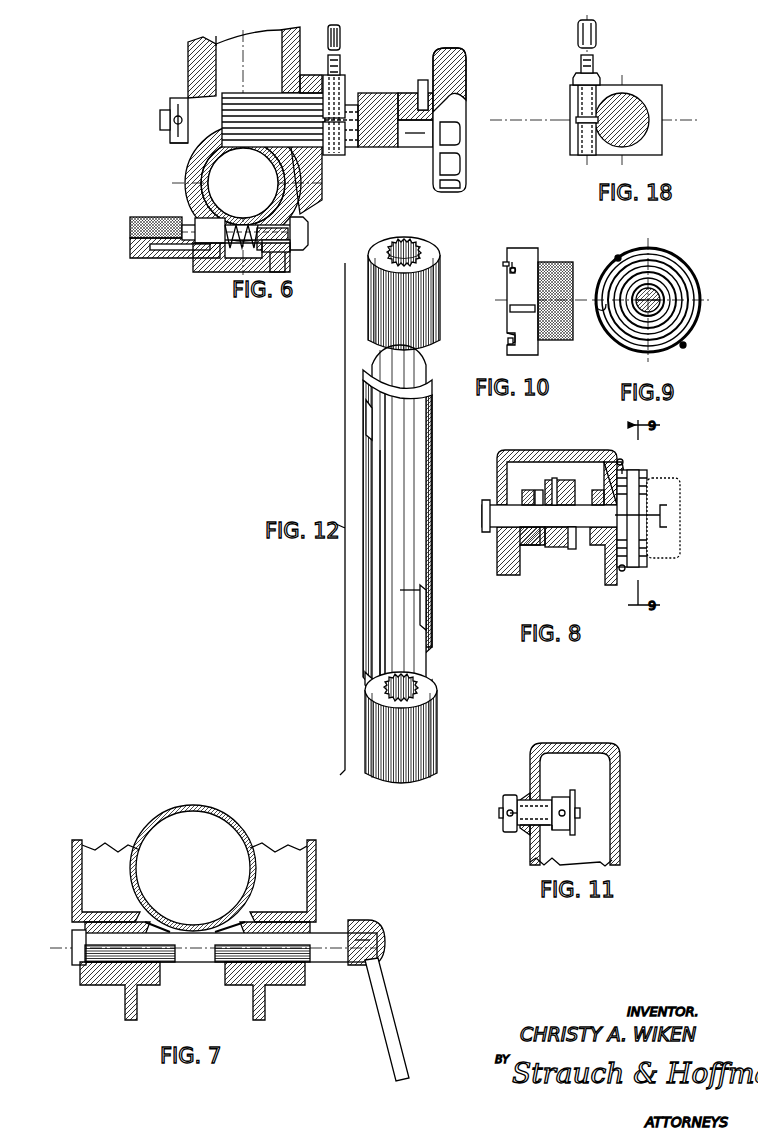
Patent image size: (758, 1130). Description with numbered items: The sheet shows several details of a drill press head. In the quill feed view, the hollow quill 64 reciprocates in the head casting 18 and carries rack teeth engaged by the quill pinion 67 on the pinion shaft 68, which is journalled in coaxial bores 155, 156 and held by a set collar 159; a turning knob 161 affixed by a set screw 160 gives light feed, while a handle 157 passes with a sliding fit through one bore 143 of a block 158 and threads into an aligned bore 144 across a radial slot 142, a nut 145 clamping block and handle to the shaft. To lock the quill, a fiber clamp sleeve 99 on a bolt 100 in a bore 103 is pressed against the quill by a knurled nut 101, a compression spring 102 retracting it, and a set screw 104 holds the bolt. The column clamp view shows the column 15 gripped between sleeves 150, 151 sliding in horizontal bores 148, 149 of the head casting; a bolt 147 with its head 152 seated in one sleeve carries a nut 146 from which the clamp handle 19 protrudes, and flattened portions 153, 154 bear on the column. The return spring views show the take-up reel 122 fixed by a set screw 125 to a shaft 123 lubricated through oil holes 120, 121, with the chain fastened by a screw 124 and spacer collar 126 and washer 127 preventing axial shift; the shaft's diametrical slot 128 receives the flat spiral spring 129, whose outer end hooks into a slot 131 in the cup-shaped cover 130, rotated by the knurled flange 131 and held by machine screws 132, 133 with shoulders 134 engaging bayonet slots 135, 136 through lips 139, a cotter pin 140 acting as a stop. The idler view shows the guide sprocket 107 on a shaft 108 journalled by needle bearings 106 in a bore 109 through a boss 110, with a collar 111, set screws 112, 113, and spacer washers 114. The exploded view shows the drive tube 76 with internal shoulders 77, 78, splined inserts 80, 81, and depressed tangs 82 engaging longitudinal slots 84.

In FIG. 7, the column 15 is at (199, 806).
In FIG. 6, the head casting 18 is at (358, 38).
In FIG. 8, the head casting 18 is at (533, 450).
In FIG. 11, the head casting 18 is at (620, 762).
In FIG. 7, the head casting 18 is at (316, 852).
In FIG. 7, the clamp handle 19 is at (390, 1003).
In FIG. 6, the quill 64 is at (284, 176).
In FIG. 6, the quill pinion 67 is at (247, 93).
In FIG. 6, the quill pinion shaft 68 is at (360, 100).
In FIG. 18, the quill pinion shaft 68 is at (644, 106).
In FIG. 12, the drive tube 76 is at (432, 480).
In FIG. 12, the internal shoulder 77 is at (426, 412).
In FIG. 12, the internal shoulder 78 is at (428, 585).
In FIG. 12, the insert 80 is at (432, 297).
In FIG. 12, the insert 81 is at (430, 728).
In FIG. 12, the depressed tang 82 is at (366, 420).
In FIG. 12, the longitudinal slot 84 is at (375, 307).
In FIG. 6, the fiber clamp sleeve 99 is at (198, 220).
In FIG. 6, the bolt 100 is at (280, 265).
In FIG. 6, the knurled nut 101 is at (153, 217).
In FIG. 6, the coiled compression spring 102 is at (218, 272).
In FIG. 6, the bore 103 is at (308, 226).
In FIG. 6, the set screw 104 is at (288, 258).
In FIG. 11, the needle bearings 106 is at (540, 800).
In FIG. 11, the guide sprocket 107 is at (572, 830).
In FIG. 11, the shaft 108 is at (580, 813).
In FIG. 11, the bore 109 is at (528, 828).
In FIG. 11, the boss 110 is at (528, 795).
In FIG. 11, the collar 111 is at (505, 830).
In FIG. 11, the set screw 112 is at (572, 790).
In FIG. 11, the set screw 113 is at (503, 810).
In FIG. 11, the spacer washers 114 is at (552, 830).
In FIG. 8, the oil hole 120 is at (495, 510).
In FIG. 8, the oil hole 121 is at (610, 462).
In FIG. 8, the take-up reel 122 is at (555, 547).
In FIG. 9, the shaft 123 is at (638, 322).
In FIG. 8, the shaft 123 is at (518, 535).
In FIG. 8, the screw 124 is at (556, 480).
In FIG. 8, the set screw 125 is at (572, 549).
In FIG. 8, the spacer collar 126 is at (537, 489).
In FIG. 8, the washer 127 is at (527, 493).
In FIG. 9, the diametrical slot 128 is at (630, 314).
In FIG. 8, the diametrical slot 128 is at (668, 504).
In FIG. 10, the flat spiral spring 129 is at (522, 305).
In FIG. 9, the flat spiral spring 129 is at (636, 340).
In FIG. 8, the flat spiral spring 129 is at (640, 565).
In FIG. 9, the cup-shaped cover 130 is at (688, 262).
In FIG. 8, the cup-shaped cover 130 is at (640, 562).
In FIG. 10, the knurled flange 131 is at (560, 262).
In FIG. 9, the knurled flange 131 is at (595, 312).
In FIG. 8, the knurled flange 131 is at (656, 480).
In FIG. 9, the machine screw 132 is at (619, 255).
In FIG. 8, the machine screw 132 is at (624, 466).
In FIG. 10, the machine screw 133 is at (515, 266).
In FIG. 9, the machine screw 133 is at (684, 347).
In FIG. 8, the machine screw 133 is at (622, 572).
In FIG. 10, the shoulder 134 is at (508, 263).
In FIG. 8, the shoulder 134 is at (620, 459).
In FIG. 10, the bayonet slot 135 is at (507, 338).
In FIG. 10, the bayonet slot 136 is at (514, 262).
In FIG. 10, the lip 139 is at (508, 270).
In FIG. 8, the cotter pin 140 is at (655, 510).
In FIG. 18, the radial slot 142 is at (576, 122).
In FIG. 18, the bore 143 is at (578, 91).
In FIG. 18, the bore 144 is at (578, 146).
In FIG. 6, the nut 145 is at (345, 72).
In FIG. 18, the nut 145 is at (576, 78).
In FIG. 7, the nut 146 is at (382, 945).
In FIG. 7, the bolt 147 is at (197, 955).
In FIG. 7, the horizontal bore 148 is at (163, 972).
In FIG. 7, the horizontal bore 149 is at (232, 972).
In FIG. 7, the sleeve 150 is at (138, 905).
In FIG. 7, the sleeve 151 is at (255, 908).
In FIG. 7, the head 152 is at (72, 960).
In FIG. 7, the flattened portion 153 is at (172, 925).
In FIG. 7, the flattened portion 154 is at (220, 925).
In FIG. 6, the bore 155 is at (178, 98).
In FIG. 6, the bore 156 is at (318, 92).
In FIG. 6, the handle 157 is at (328, 42).
In FIG. 18, the handle 157 is at (578, 32).
In FIG. 6, the block 158 is at (331, 125).
In FIG. 18, the block 158 is at (634, 156).
In FIG. 6, the set collar 159 is at (172, 141).
In FIG. 6, the set screw 160 is at (420, 95).
In FIG. 6, the turning knob 161 is at (452, 163).